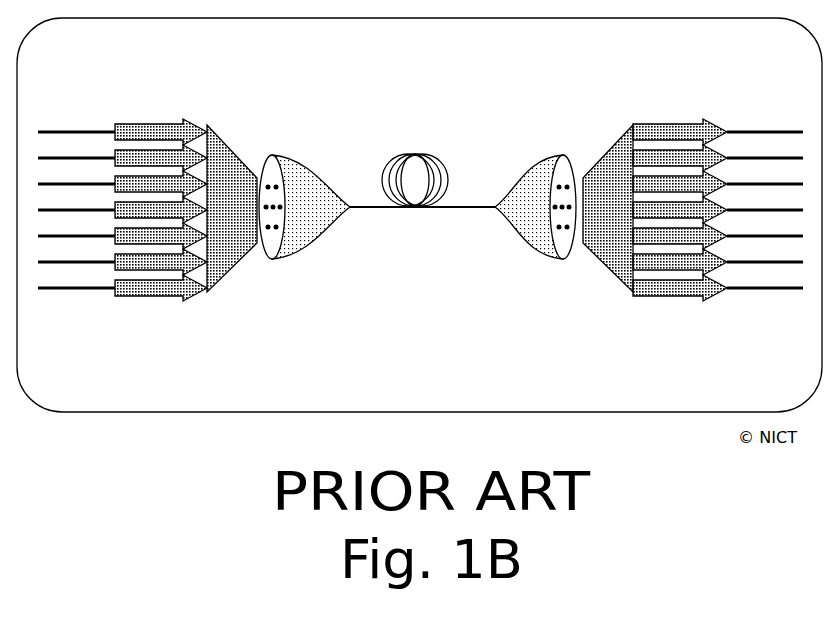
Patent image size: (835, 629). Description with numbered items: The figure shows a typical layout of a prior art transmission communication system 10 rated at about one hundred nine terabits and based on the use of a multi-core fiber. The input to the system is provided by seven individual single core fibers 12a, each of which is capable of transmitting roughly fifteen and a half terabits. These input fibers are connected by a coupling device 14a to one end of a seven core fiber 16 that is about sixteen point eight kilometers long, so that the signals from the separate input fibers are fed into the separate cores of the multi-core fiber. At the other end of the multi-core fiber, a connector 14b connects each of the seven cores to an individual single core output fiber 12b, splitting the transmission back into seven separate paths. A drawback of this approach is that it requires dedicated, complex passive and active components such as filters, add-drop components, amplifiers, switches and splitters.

The transmission communication system 10 is at (104, 94).
The single core fibers 12a is at (152, 300).
The single core output fiber 12b is at (663, 298).
The coupling device 14a is at (220, 280).
The connector 14b is at (612, 283).
The seven core fiber 16 is at (442, 217).